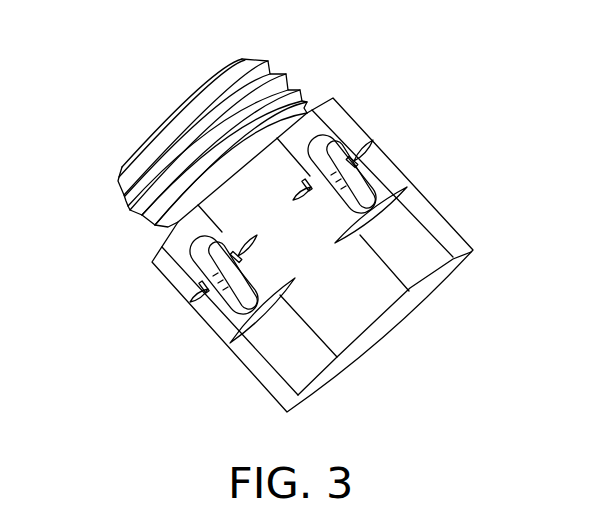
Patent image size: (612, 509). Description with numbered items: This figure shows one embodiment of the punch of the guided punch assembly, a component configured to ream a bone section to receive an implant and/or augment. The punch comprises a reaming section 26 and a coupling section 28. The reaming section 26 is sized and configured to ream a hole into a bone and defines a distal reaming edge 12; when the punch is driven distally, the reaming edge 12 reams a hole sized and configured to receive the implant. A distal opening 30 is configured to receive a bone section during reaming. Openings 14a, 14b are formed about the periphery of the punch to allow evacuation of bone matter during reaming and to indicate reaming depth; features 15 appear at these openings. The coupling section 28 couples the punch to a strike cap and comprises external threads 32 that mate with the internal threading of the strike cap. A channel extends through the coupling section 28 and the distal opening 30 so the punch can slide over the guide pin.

The reaming edge 12 is at (362, 360).
The opening 14a is at (360, 186).
The opening 14b is at (230, 296).
The pin 15 is at (232, 347).
The reaming section 26 is at (441, 212).
The coupling section 28 is at (184, 129).
The distal opening 30 is at (402, 325).
The external threads 32 is at (271, 70).